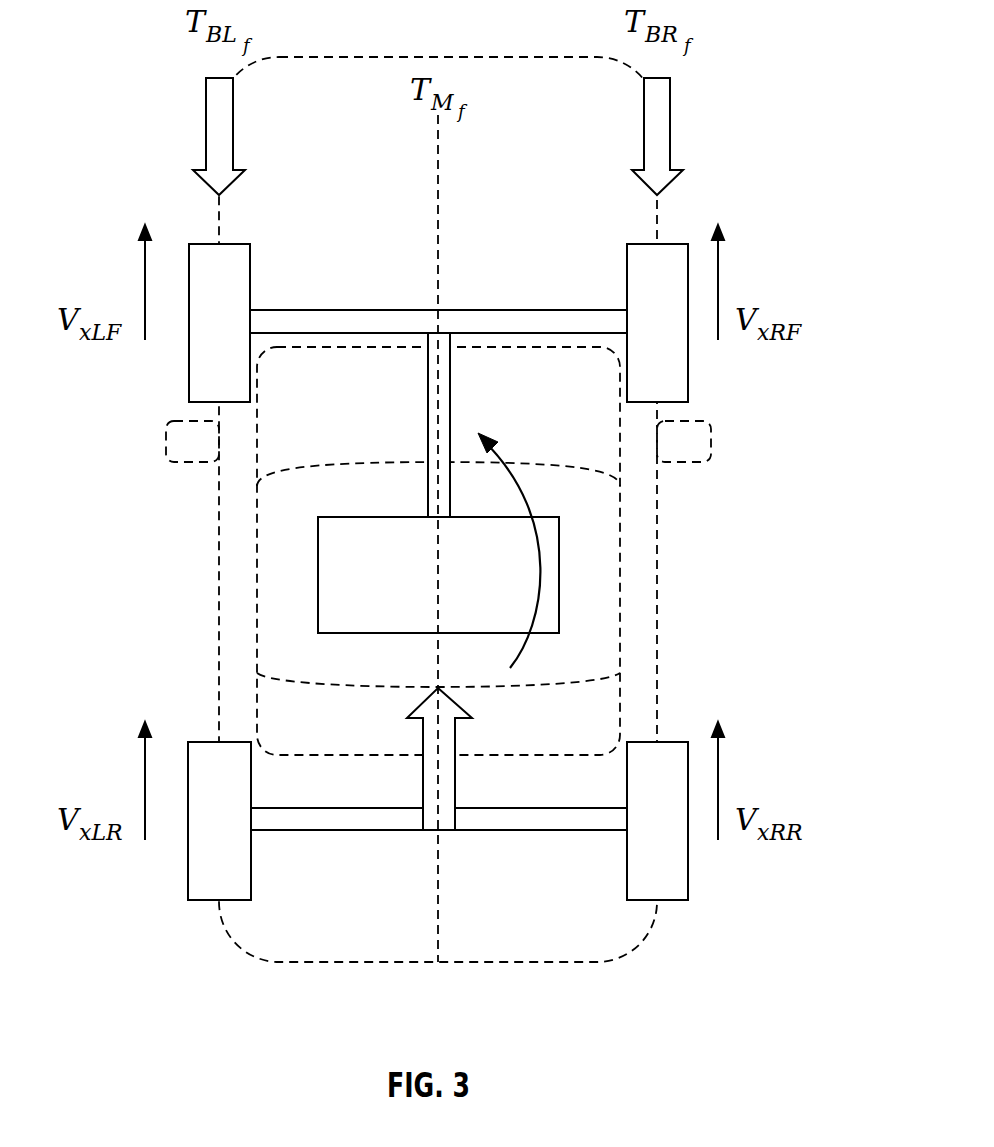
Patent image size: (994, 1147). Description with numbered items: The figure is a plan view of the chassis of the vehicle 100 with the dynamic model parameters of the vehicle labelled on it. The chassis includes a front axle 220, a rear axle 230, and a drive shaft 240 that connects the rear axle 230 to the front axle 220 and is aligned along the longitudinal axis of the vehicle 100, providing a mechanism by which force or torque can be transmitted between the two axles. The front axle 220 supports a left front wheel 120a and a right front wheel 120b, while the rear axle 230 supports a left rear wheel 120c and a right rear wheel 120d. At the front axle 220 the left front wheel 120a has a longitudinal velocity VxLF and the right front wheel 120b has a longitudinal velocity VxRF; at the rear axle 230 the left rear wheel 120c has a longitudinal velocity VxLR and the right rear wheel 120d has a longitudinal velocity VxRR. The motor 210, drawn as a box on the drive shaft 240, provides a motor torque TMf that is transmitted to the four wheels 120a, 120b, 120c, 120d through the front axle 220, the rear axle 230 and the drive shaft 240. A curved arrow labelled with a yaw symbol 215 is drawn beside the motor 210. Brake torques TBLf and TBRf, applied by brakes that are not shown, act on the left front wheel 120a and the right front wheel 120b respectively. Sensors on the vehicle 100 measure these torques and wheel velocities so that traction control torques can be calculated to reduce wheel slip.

The vehicle 100 is at (657, 582).
The left front wheel 120a is at (189, 347).
The right front wheel 120b is at (688, 365).
The left rear wheel 120c is at (189, 843).
The right rear wheel 120d is at (688, 843).
The motor 210 is at (391, 591).
The yaw rotation arrow 215 is at (547, 573).
The front axle 220 is at (546, 308).
The rear axle 230 is at (511, 832).
The drive shaft 240 is at (428, 430).